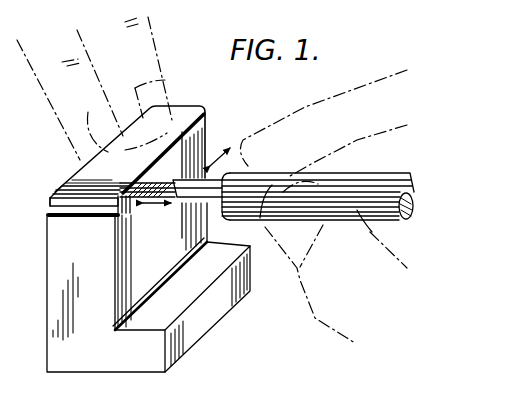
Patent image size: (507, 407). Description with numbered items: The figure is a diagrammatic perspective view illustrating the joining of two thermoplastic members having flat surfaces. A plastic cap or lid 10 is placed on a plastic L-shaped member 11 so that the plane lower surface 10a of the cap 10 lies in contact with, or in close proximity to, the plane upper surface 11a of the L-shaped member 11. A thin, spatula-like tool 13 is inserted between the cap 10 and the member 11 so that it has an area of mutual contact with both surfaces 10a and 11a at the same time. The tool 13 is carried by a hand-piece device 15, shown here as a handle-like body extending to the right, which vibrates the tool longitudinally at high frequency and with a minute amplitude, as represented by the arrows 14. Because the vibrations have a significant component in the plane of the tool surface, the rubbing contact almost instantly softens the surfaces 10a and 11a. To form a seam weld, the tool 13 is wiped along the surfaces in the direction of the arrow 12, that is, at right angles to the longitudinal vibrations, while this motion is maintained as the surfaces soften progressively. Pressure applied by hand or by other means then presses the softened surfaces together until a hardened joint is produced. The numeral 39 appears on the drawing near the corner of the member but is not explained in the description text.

The plastic cap or lid 10 is at (80, 178).
The plane lower surface of cap 10a is at (47, 212).
The plastic L-shaped member 11 is at (52, 345).
The plane upper surface of L-shaped member 11a is at (92, 217).
The arrow indicating tool movement direction 12 is at (218, 158).
The tool 13 is at (166, 142).
The arrows representing longitudinal vibrations 14 is at (163, 204).
The device for effecting high frequency vibrations 15 is at (369, 189).
The groove 39 is at (208, 243).